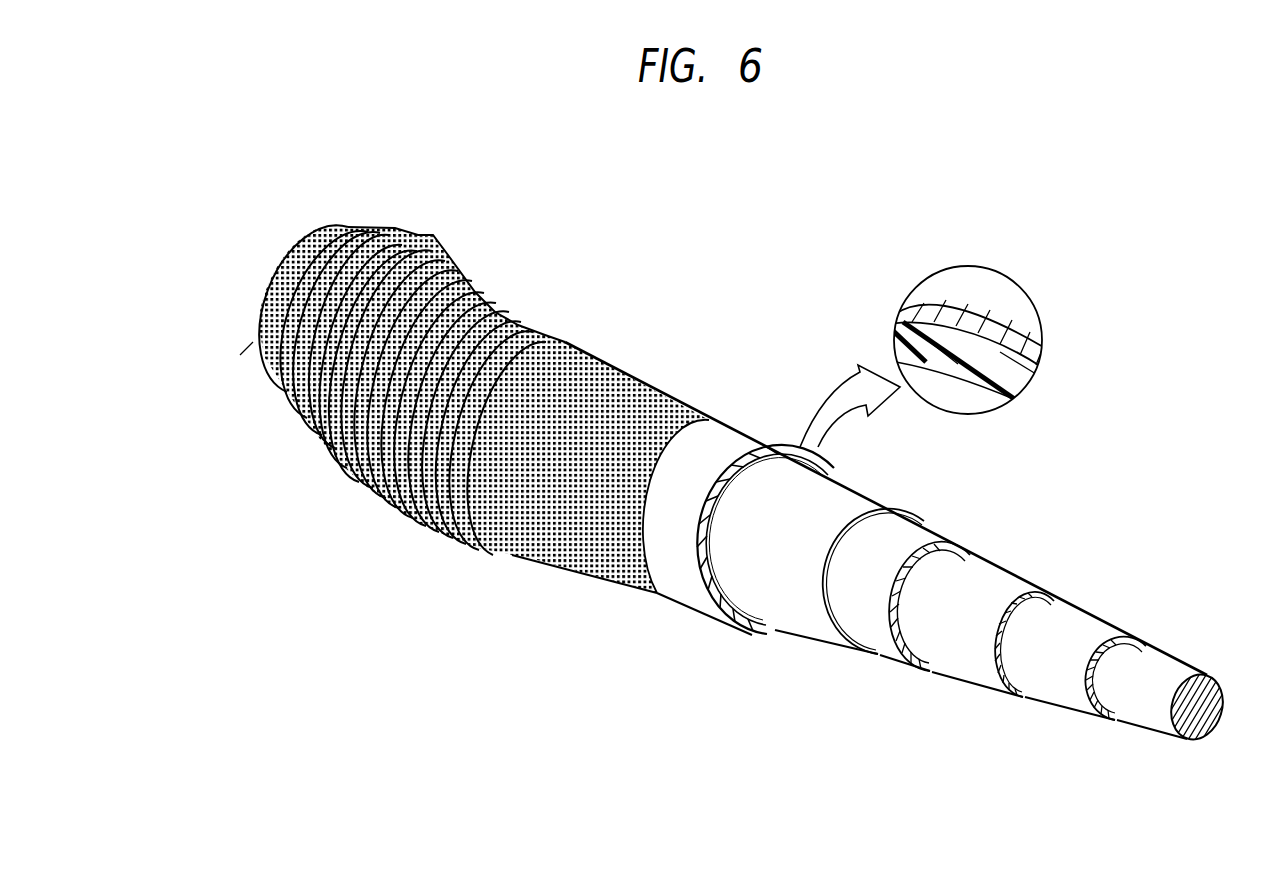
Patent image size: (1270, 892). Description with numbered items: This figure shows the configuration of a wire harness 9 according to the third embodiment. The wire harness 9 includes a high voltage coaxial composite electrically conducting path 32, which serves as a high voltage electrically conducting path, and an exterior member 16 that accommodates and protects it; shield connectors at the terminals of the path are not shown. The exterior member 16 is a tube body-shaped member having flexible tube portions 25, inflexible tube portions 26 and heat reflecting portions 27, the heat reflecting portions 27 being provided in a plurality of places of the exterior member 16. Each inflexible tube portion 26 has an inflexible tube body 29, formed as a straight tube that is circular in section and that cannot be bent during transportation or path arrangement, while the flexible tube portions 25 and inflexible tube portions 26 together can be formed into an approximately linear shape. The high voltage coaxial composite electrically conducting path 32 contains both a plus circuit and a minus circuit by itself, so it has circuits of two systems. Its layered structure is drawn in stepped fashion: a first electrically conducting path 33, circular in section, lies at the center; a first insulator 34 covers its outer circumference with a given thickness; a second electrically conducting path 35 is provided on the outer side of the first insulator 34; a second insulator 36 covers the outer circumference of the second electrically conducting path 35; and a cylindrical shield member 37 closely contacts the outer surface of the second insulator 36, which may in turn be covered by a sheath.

The wire harness 9 is at (995, 240).
The exterior member 16 is at (603, 288).
The flexible tube portion 25 is at (268, 382).
The inflexible tube portion 26 is at (623, 400).
The heat reflecting portion 27 is at (745, 442).
The inflexible tube body 29 is at (555, 530).
The high voltage coaxial composite electrically conducting path 32 is at (988, 631).
The first electrically conducting path 33 is at (1138, 700).
The first insulator 34 is at (1050, 677).
The second electrically conducting path 35 is at (960, 655).
The second insulator 36 is at (866, 620).
The shield member 37 is at (762, 590).